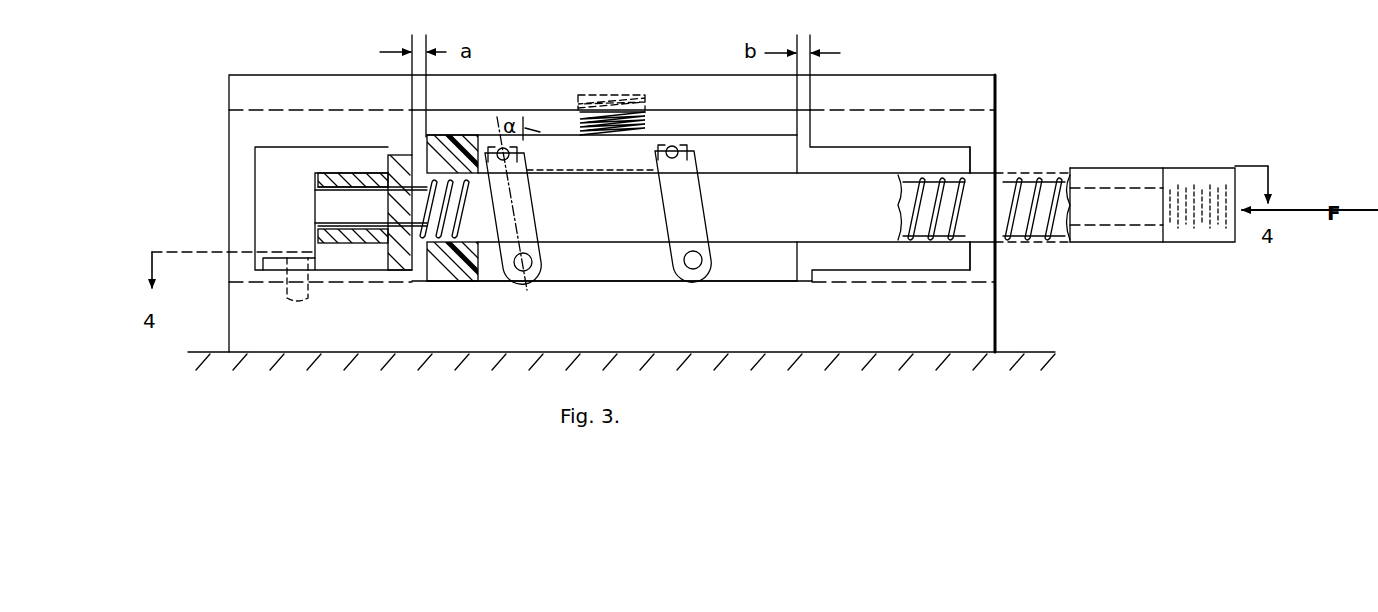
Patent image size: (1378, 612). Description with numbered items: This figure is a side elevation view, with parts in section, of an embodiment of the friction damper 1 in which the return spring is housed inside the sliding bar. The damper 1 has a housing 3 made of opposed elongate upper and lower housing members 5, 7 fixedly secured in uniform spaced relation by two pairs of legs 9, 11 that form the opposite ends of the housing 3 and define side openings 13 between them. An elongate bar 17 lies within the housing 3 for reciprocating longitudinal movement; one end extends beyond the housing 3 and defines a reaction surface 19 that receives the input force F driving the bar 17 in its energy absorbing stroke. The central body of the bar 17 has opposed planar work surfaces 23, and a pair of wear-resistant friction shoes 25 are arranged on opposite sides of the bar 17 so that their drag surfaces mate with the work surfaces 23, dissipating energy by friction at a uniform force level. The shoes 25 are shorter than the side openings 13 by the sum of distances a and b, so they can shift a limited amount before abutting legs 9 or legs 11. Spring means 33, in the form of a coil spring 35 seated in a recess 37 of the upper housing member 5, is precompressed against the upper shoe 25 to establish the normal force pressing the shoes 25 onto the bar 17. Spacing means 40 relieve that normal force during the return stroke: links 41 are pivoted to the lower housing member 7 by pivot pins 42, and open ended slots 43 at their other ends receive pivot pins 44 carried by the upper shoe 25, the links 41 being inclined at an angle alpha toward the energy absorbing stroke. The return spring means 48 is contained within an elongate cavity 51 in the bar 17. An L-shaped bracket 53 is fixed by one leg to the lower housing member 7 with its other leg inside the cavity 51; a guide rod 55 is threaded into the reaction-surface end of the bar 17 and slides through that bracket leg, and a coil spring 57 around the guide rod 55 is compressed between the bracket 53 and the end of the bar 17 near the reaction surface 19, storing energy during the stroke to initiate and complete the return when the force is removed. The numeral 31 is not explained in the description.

The damper 1 is at (925, 52).
The housing 3 is at (535, 73).
The upper housing member 5 is at (676, 75).
The lower housing member 7 is at (812, 325).
The housing legs 9 is at (243, 183).
The housing legs 11 is at (980, 145).
The side openings 13 is at (277, 217).
The bar 17 is at (822, 218).
The reaction surface 19 is at (1235, 238).
The work surfaces 23 is at (728, 244).
The friction shoes 25 is at (612, 162).
The carrier lower surface 31 is at (552, 278).
The spring means 33 is at (650, 122).
The coil spring 35 is at (650, 112).
The recess 37 is at (578, 95).
The spacing means 40 is at (533, 212).
The links 41 is at (530, 196).
The pivot pins 42 is at (520, 268).
The open ended slots 43 is at (485, 142).
The pivot pins 44 is at (516, 160).
The return spring means 48 is at (1044, 240).
The cavity 51 is at (432, 177).
The L-shaped bracket 53 is at (393, 265).
The guide rod 55 is at (450, 262).
The coil spring 57 is at (1010, 243).